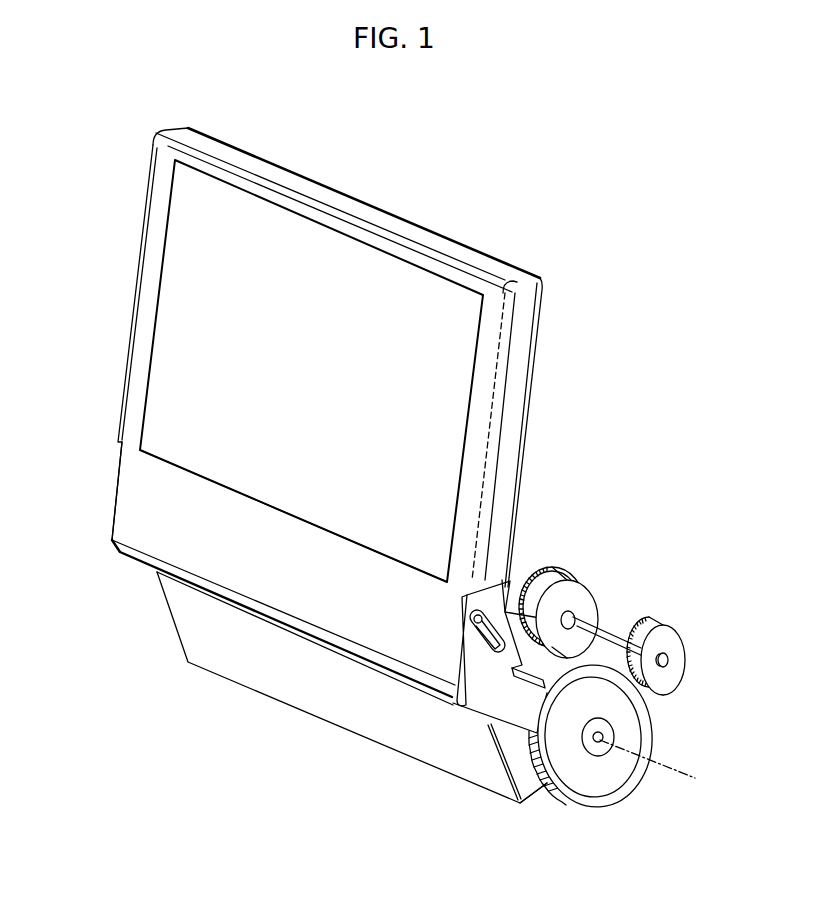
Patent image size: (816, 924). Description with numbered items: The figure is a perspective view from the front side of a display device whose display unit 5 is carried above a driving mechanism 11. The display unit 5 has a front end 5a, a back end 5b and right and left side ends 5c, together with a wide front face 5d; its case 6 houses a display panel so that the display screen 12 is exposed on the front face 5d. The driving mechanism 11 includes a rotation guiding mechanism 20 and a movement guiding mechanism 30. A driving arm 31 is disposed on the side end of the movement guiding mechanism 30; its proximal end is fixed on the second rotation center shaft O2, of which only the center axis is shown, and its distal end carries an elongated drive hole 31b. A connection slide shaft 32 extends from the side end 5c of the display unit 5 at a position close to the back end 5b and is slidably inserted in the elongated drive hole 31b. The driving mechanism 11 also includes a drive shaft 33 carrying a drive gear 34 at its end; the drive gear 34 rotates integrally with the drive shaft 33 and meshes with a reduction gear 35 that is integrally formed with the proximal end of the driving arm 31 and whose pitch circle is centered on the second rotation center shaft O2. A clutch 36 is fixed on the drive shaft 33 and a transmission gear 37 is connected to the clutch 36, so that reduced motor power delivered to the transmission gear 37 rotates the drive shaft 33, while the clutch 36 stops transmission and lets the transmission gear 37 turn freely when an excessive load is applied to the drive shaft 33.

The display unit 5 is at (530, 264).
The front end 5a is at (280, 168).
The back end 5b is at (210, 595).
The side end 5c is at (137, 282).
The front face 5d is at (150, 495).
The case 6 is at (522, 380).
The display screen 12 is at (335, 250).
The rotation guiding mechanism 20 is at (318, 722).
The driving mechanism 11 is at (630, 533).
The movement guiding mechanism 30 is at (468, 727).
The driving arm 31 is at (470, 688).
The elongated drive hole 31b is at (491, 647).
The connection slide shaft 32 is at (476, 630).
The drive shaft 33 is at (612, 628).
The drive gear 34 is at (672, 622).
The reduction gear 35 is at (599, 809).
The clutch 36 is at (585, 601).
The transmission gear 37 is at (553, 573).
The second rotation center shaft O2 is at (659, 766).